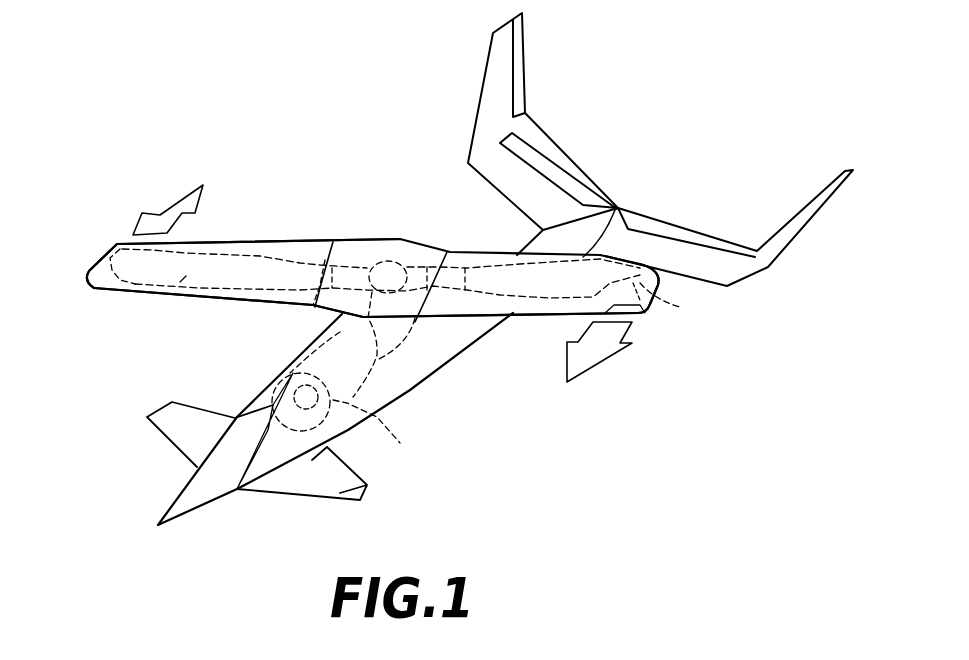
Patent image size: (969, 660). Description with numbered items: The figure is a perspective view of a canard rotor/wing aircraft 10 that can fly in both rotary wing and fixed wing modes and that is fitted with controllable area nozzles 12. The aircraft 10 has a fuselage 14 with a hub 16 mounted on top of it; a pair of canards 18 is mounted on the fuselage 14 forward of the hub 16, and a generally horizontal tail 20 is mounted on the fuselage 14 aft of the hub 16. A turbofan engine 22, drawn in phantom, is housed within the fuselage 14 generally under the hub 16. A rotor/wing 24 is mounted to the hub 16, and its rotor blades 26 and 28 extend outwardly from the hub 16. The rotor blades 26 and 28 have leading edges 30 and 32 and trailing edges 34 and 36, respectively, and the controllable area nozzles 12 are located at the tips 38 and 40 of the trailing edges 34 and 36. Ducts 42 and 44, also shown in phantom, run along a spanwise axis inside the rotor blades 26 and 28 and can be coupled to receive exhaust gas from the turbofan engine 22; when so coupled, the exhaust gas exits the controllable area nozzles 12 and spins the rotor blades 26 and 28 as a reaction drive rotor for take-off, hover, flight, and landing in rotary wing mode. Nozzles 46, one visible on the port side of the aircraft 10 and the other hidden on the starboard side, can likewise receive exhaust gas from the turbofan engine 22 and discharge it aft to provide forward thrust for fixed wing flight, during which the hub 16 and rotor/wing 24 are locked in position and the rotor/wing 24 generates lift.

The aircraft 10 is at (152, 92).
The controllable area nozzles 12 is at (113, 222).
The fuselage 14 is at (444, 407).
The hub 16 is at (380, 240).
The canards 18 is at (146, 462).
The horizontal tail 20 is at (667, 166).
The turbofan engine 22 is at (372, 430).
The rotor/wing 24 is at (335, 165).
The rotor blade 26 is at (110, 350).
The rotor blade 28 is at (522, 342).
The leading edge 30 is at (248, 304).
The leading edge 32 is at (455, 250).
The trailing edge 34 is at (273, 241).
The trailing edge 36 is at (463, 318).
The tip 38 is at (94, 240).
The tip 40 is at (656, 328).
The duct 42 is at (183, 280).
The duct 44 is at (680, 307).
The nozzles 46 is at (516, 253).